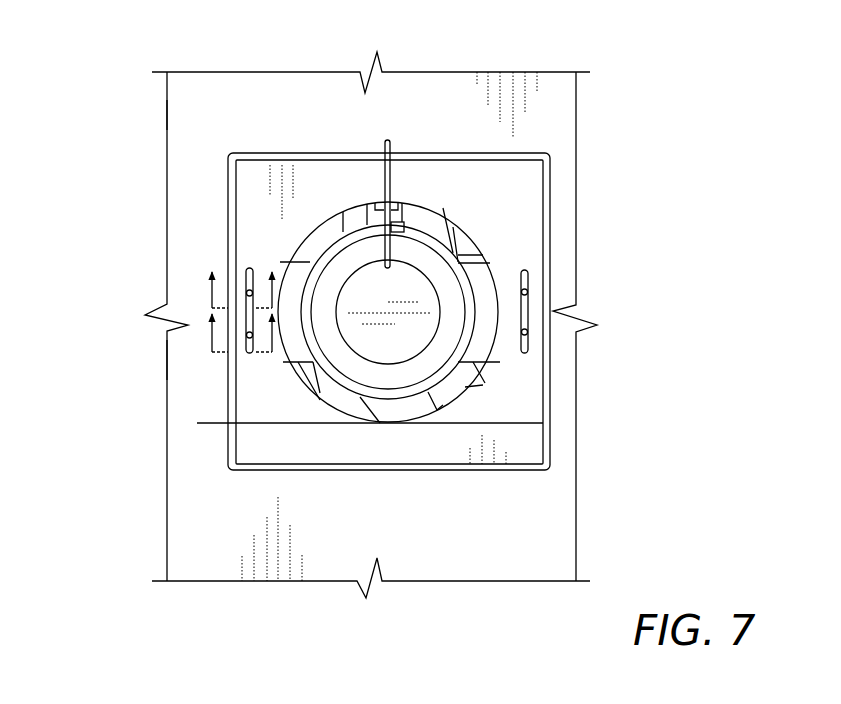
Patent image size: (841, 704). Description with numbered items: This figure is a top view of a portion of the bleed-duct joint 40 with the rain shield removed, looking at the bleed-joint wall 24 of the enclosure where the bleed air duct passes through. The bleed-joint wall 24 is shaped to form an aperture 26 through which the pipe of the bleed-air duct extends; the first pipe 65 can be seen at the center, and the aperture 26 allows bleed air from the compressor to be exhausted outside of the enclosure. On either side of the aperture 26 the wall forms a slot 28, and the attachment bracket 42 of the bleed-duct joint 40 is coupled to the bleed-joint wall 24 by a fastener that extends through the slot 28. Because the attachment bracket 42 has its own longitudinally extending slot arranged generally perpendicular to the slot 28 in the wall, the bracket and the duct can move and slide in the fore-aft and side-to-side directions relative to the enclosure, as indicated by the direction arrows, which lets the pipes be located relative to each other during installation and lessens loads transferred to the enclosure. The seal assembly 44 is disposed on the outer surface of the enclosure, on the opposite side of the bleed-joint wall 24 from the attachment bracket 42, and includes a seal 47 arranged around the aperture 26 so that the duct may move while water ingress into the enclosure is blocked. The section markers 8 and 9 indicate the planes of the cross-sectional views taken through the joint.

The bleed-duct joint 40 is at (137, 110).
The aperture 26 is at (315, 228).
The first pipe 65 is at (453, 225).
The slot 28 is at (250, 267).
The seal assembly 44 is at (178, 364).
The seal 47 is at (232, 447).
The attachment bracket 42 is at (482, 346).
The bleed-joint wall 24 is at (177, 543).
The section line 8- 8 is at (242, 272).
The section line 9- 9 is at (242, 350).